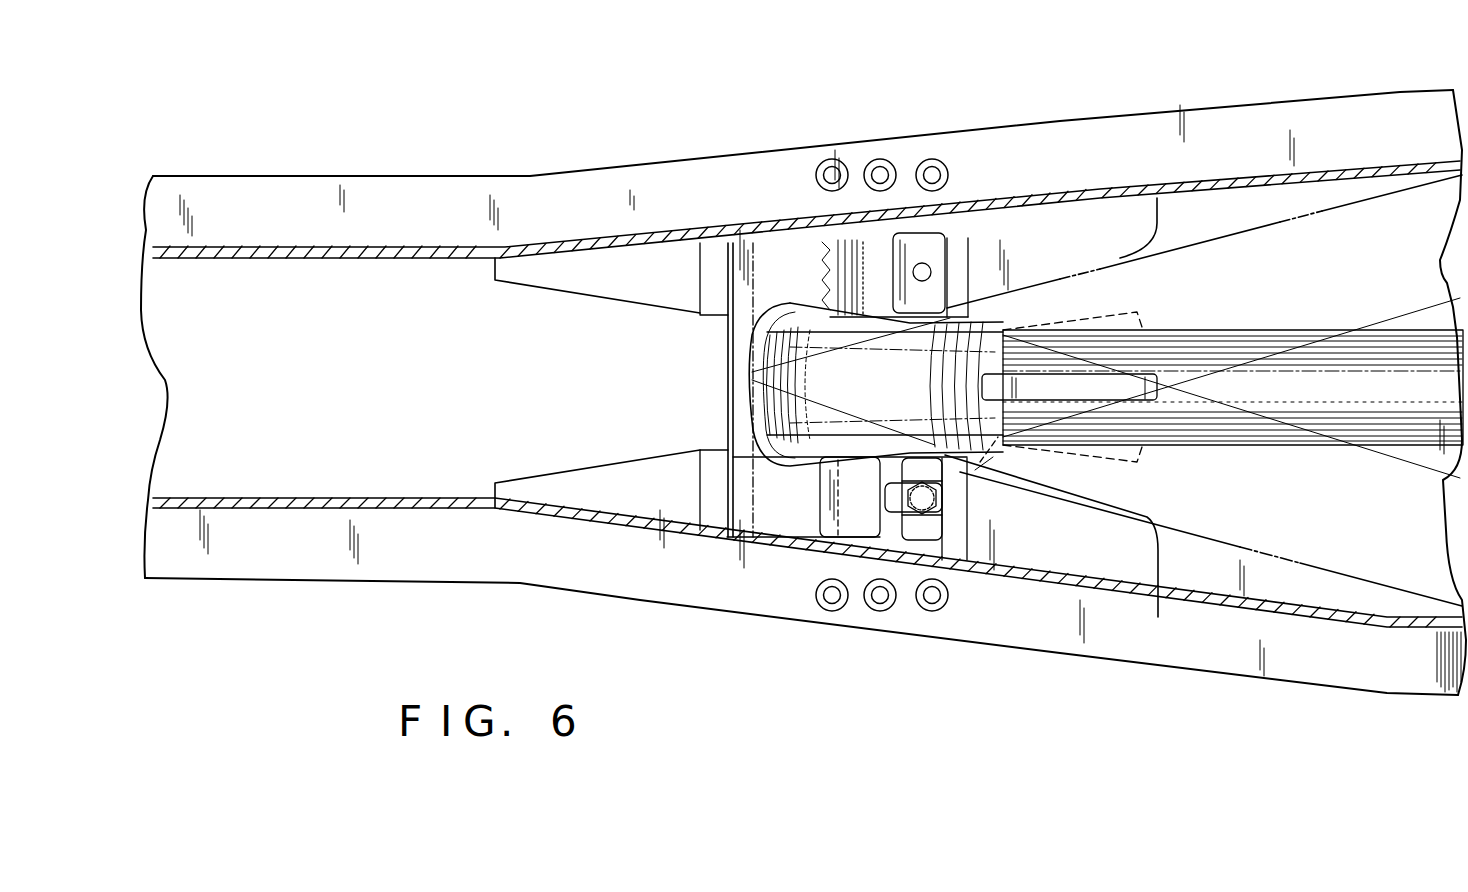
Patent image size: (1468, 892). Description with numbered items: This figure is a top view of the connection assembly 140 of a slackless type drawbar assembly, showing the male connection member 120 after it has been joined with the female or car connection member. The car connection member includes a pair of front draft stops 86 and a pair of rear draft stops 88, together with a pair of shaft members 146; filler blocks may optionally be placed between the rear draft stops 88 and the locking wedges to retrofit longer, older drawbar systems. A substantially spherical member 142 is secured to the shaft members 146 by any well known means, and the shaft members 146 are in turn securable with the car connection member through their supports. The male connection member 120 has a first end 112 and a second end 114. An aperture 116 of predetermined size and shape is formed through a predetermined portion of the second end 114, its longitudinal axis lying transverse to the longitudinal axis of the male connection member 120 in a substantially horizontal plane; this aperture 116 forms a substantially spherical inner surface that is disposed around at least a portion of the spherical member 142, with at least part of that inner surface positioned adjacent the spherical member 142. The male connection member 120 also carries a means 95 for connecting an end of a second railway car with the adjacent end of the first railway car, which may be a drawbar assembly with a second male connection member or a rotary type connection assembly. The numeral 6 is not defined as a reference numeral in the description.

The lens barrel 6 is at (755, 370).
The front draft stop 86 is at (1110, 215).
The rear draft stop 88 is at (605, 260).
The means for connecting 95 is at (1223, 340).
The first end 112 is at (993, 460).
The second end 114 is at (1407, 484).
The aperture 116 is at (975, 391).
The male connection member 120 is at (1101, 472).
The connection assembly 140 is at (803, 458).
The spherical shaped member 142 is at (780, 463).
The shaft member 146 is at (912, 255).